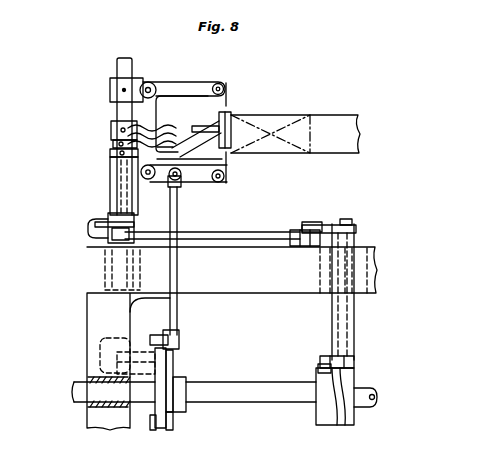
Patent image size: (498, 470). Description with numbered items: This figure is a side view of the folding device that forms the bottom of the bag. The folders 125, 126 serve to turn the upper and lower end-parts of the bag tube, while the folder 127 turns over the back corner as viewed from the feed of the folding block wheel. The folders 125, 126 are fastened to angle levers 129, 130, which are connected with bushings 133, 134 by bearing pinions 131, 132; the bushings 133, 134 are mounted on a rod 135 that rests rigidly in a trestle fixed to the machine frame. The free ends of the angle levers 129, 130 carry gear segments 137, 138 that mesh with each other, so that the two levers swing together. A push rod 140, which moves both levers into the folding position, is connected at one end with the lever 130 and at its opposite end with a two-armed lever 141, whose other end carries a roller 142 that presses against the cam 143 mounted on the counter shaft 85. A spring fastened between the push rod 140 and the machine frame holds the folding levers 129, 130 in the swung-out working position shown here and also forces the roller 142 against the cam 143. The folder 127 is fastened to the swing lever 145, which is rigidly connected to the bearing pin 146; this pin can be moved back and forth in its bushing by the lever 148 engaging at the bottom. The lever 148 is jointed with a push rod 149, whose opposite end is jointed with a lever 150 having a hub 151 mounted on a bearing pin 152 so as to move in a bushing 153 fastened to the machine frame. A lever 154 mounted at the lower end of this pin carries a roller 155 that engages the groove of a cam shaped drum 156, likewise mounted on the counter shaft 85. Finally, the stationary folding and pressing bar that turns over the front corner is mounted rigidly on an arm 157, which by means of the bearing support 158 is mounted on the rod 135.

The counter shaft 85 is at (236, 406).
The folder 125 is at (226, 95).
The folder 126 is at (229, 174).
The folder 127 is at (232, 118).
The angle lever 129 is at (179, 87).
The angle lever 130 is at (190, 178).
The bearing pinion 131 is at (148, 84).
The bearing pinion 132 is at (145, 183).
The bushing 133 is at (109, 84).
The bushing 134 is at (109, 172).
The rod 135 is at (122, 58).
The gear segment 137 is at (172, 113).
The gear segment 138 is at (172, 152).
The push rod 140 is at (178, 270).
The two-armed lever 141 is at (157, 390).
The roller 142 is at (176, 428).
The cam 143 is at (175, 378).
The swing lever 145 is at (112, 142).
The bearing pin 146 is at (110, 157).
The lever 148 is at (102, 213).
The push rod 149 is at (215, 234).
The lever 150 is at (315, 227).
The hub 151 is at (356, 232).
The bearing pin 152 is at (346, 221).
The bushing 153 is at (352, 318).
The lever 154 is at (346, 356).
The roller 155 is at (318, 367).
The cam shaped drum 156 is at (346, 379).
The arm 157 is at (190, 128).
The bearing support 158 is at (111, 120).